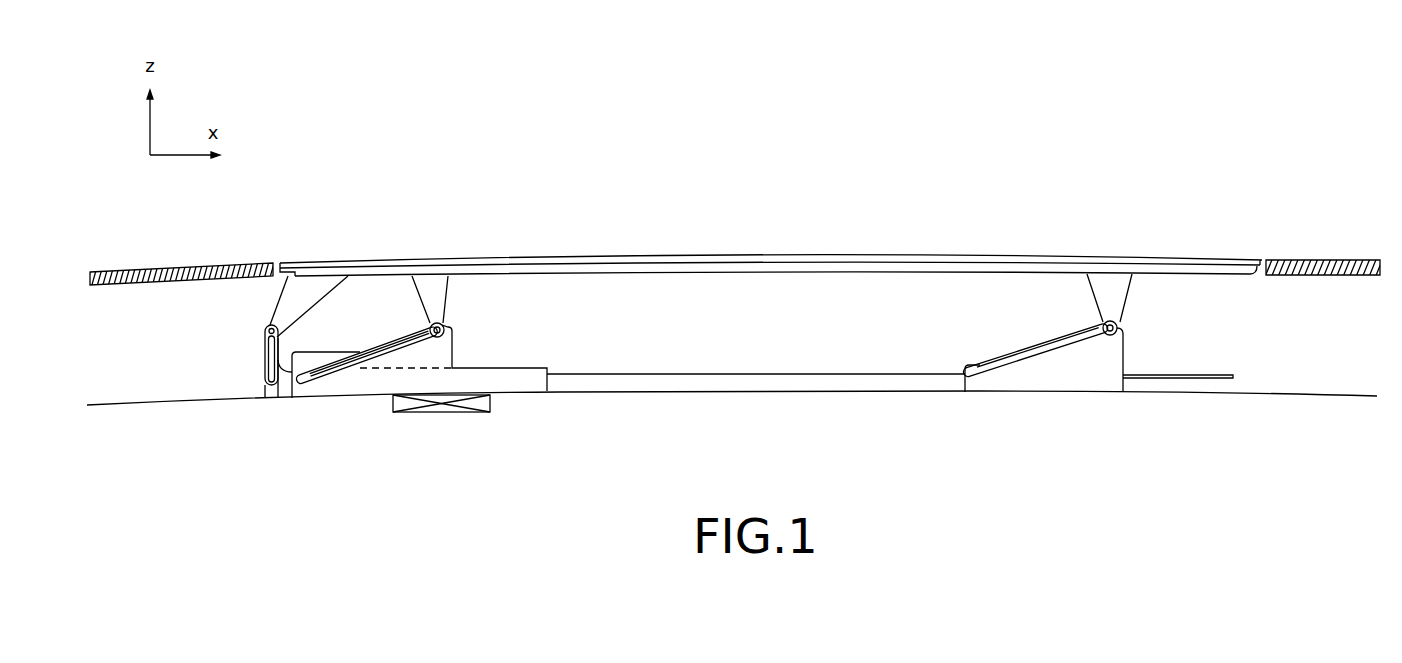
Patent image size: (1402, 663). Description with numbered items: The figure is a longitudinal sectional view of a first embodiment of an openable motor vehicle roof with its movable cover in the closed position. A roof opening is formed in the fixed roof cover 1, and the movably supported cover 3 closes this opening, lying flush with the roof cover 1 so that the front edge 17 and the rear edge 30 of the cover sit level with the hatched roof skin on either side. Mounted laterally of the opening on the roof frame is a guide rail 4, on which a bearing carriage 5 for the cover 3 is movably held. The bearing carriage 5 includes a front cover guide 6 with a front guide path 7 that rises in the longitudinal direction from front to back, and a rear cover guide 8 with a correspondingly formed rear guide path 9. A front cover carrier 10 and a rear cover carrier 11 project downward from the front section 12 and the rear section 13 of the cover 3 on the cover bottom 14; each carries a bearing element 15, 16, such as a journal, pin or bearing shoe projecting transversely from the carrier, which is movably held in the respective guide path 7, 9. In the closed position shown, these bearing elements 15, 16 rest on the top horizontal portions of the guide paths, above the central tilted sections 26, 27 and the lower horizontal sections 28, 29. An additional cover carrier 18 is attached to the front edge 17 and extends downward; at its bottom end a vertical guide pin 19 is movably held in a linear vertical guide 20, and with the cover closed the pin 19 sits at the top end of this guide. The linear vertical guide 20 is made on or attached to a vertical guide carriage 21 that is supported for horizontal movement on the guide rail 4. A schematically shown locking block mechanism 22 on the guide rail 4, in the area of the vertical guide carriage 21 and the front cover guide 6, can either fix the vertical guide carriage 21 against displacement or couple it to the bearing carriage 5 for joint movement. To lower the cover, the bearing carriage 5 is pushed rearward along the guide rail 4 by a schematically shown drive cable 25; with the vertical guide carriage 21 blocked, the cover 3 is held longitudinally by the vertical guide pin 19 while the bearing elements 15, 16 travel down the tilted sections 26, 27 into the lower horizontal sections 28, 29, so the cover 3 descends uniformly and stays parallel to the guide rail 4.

The fixed roof cover 1 is at (150, 264).
The cover 3 is at (723, 254).
The guide rail 4 is at (1149, 400).
The bearing carriage 5 is at (800, 381).
The front cover guide 6 is at (378, 400).
The front guide path 7 is at (405, 364).
The rear cover guide 8 is at (1045, 390).
The rear guide path 9 is at (1076, 360).
The front cover carrier 10 is at (438, 290).
The rear cover carrier 11 is at (1108, 288).
The front section 12 is at (405, 249).
The rear section 13 is at (1079, 249).
The cover bottom 14 is at (606, 286).
The bearing element 15 is at (444, 322).
The bearing element 16 is at (1113, 322).
The front edge 17 is at (284, 247).
The cover carrier 18 is at (311, 292).
The vertical guide pin 19 is at (266, 330).
The linear vertical guide 20 is at (276, 393).
The vertical guide carriage 21 is at (283, 389).
The locking block mechanism 22 is at (447, 405).
The drive cable 25 is at (1216, 380).
The central tilted section 26 is at (361, 372).
The central tilted section 27 is at (1010, 366).
The lower horizontal section 28 is at (305, 383).
The lower horizontal section 29 is at (967, 382).
The rear edge 30 is at (1251, 252).